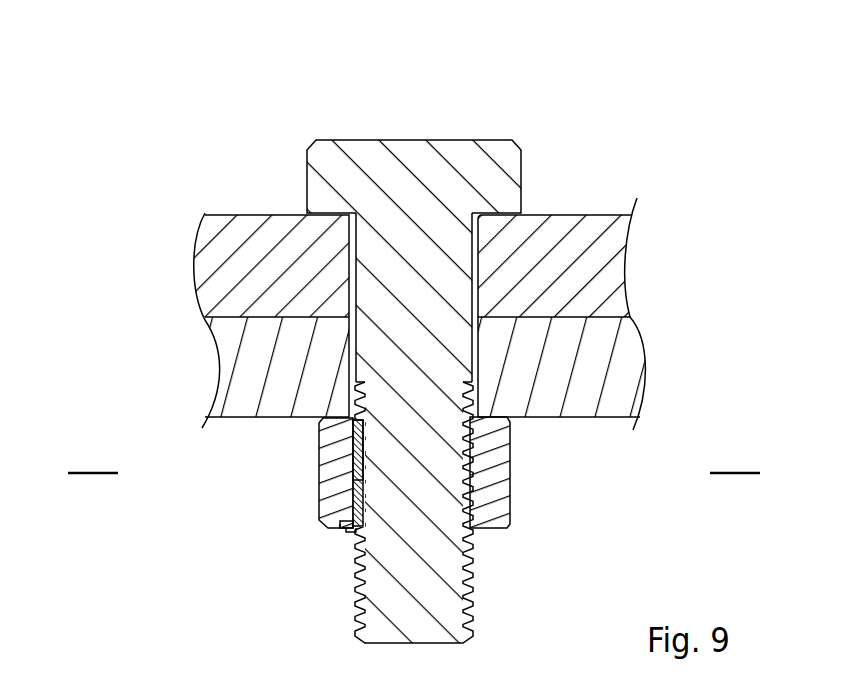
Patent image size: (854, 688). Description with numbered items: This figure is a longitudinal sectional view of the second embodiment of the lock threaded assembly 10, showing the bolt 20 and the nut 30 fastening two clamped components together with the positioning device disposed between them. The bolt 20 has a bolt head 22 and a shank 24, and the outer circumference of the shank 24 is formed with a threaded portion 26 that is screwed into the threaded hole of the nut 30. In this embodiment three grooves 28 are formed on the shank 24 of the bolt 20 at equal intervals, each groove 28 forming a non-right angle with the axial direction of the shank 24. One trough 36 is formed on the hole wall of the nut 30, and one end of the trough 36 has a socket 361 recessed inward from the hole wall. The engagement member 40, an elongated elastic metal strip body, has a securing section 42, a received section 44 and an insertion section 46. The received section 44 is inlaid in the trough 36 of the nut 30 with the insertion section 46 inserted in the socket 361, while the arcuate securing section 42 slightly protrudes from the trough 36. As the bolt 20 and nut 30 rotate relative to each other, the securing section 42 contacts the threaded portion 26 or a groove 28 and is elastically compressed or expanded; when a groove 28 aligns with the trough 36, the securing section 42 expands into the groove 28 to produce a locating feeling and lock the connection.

The lock threaded assembly 10 is at (576, 100).
The bolt 20 is at (379, 340).
The bolt head 22 is at (330, 176).
The shank 24 is at (470, 268).
The threaded portion 26 is at (472, 587).
The groove 28 is at (355, 384).
The nut 30 is at (421, 527).
The trough 36 is at (353, 505).
The socket 361 is at (350, 530).
The engagement member 40 is at (347, 514).
The securing section 42 is at (353, 483).
The received section 44 is at (353, 446).
The insertion section 46 is at (351, 522).